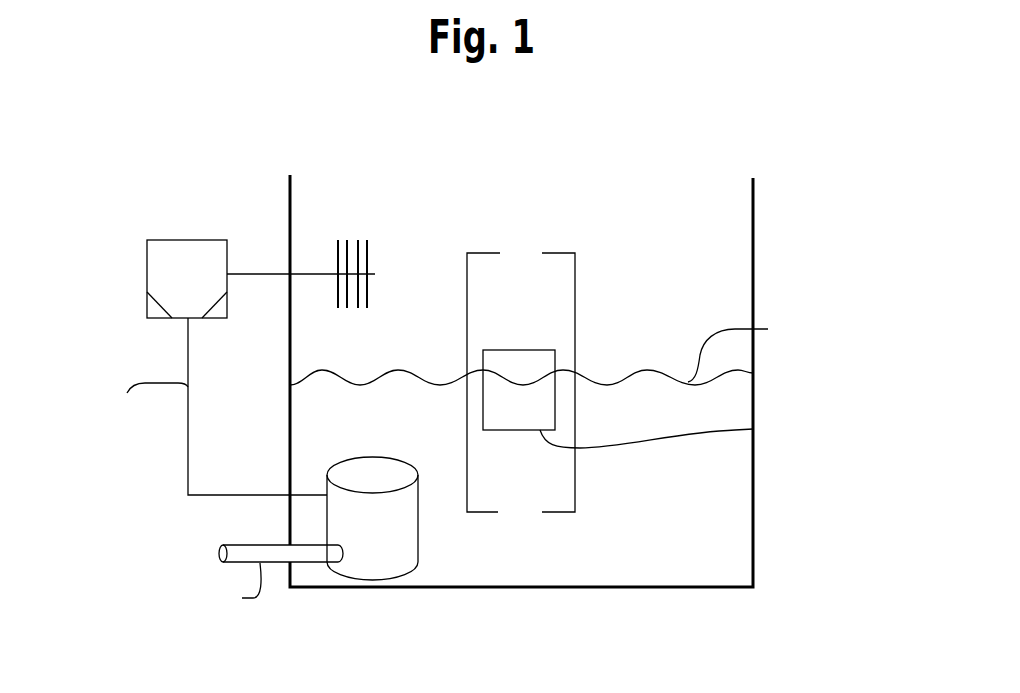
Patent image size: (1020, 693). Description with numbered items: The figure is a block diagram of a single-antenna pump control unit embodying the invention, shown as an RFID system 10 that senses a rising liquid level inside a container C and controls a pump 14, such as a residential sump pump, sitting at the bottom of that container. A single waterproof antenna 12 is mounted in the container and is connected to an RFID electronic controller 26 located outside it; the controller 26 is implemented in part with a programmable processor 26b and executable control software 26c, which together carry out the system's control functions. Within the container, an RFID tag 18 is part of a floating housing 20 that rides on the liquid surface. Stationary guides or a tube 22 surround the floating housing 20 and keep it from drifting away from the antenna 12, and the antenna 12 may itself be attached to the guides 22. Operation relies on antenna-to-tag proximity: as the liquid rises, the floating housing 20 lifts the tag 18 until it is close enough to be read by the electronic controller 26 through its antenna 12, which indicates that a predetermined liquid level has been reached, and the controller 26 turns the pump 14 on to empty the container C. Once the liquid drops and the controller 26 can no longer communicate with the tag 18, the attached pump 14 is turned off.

The RFID system 10 is at (757, 133).
The antenna 12 is at (367, 265).
The pump 14 is at (378, 562).
The RFID tag 18 is at (533, 363).
The floating housing 20 is at (753, 429).
The stationary guides or tube 22 is at (590, 490).
The RFID electronic controller 26 is at (147, 260).
The programmable processor 26b is at (214, 322).
The executable control software 26c is at (140, 308).
The container C is at (754, 488).